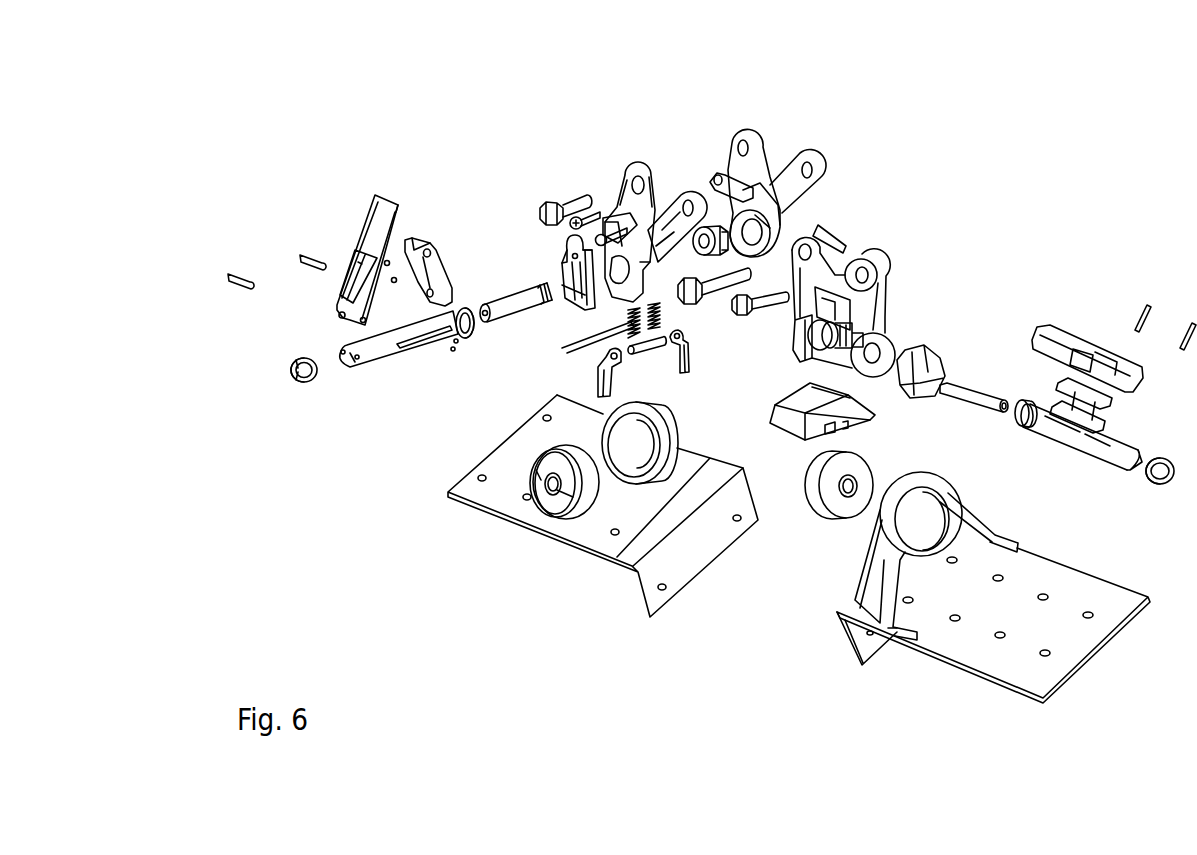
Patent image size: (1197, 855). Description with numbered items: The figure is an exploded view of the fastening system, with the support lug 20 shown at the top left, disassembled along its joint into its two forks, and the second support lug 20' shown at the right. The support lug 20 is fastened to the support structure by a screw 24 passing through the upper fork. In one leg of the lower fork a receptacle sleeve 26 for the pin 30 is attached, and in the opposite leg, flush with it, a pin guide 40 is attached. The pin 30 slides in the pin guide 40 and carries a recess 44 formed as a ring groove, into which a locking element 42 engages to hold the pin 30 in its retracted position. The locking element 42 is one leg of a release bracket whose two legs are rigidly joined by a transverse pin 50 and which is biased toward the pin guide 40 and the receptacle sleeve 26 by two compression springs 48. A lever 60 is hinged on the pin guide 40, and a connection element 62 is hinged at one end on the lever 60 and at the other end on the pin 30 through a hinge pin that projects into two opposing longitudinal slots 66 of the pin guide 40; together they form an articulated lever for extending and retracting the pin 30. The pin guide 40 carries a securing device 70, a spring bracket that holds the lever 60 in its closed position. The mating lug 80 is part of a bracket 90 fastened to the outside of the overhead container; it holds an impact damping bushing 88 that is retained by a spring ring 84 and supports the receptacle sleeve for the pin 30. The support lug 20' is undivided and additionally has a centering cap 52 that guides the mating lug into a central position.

The support lug 20 is at (527, 352).
The support lug 20' is at (978, 446).
The screw 24 is at (570, 197).
The receptacle sleeve 26 is at (698, 190).
The pin 30 is at (498, 319).
The pin guide 40 is at (378, 353).
The locking element 42 is at (598, 376).
The recess 44 is at (541, 292).
The compression springs 48 is at (562, 348).
The transverse pin 50 is at (645, 347).
The centering cap 52 is at (801, 402).
The lever 60 is at (375, 222).
The connection element 62 is at (438, 267).
The longitudinal slots 66 is at (415, 349).
The securing device 70 is at (566, 243).
The lug 80 is at (643, 443).
The spring ring 84 is at (534, 473).
The impact damping bushing 88 is at (590, 500).
The bracket 90 is at (512, 505).